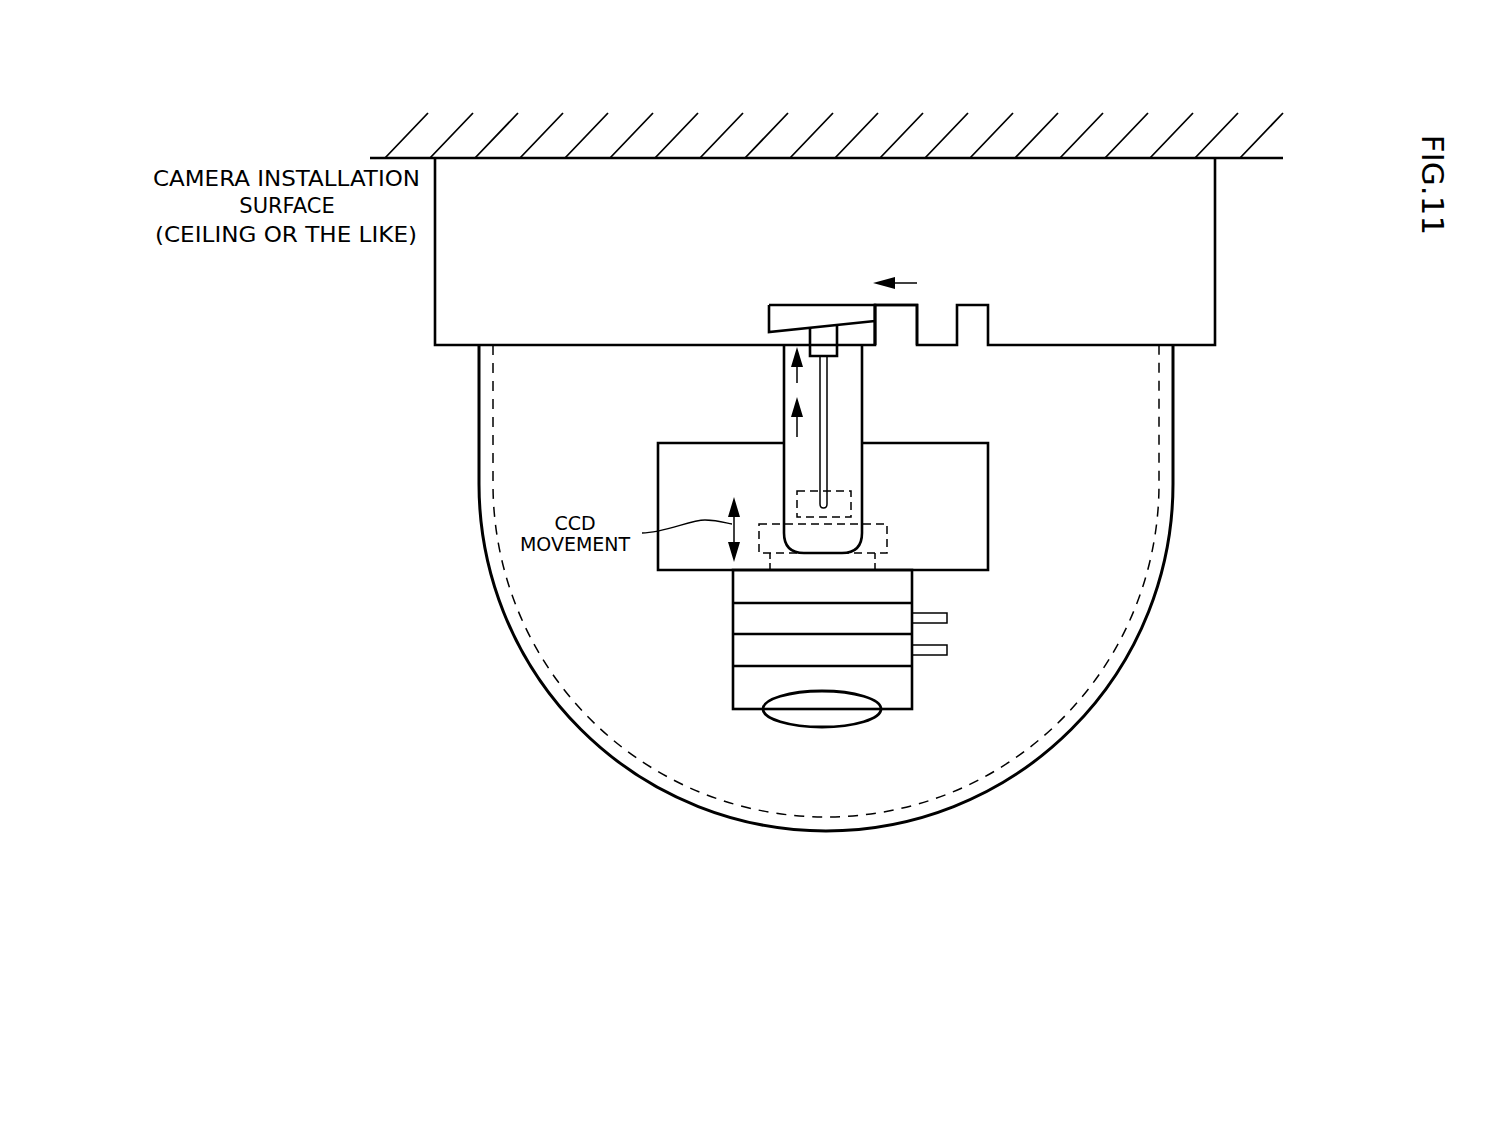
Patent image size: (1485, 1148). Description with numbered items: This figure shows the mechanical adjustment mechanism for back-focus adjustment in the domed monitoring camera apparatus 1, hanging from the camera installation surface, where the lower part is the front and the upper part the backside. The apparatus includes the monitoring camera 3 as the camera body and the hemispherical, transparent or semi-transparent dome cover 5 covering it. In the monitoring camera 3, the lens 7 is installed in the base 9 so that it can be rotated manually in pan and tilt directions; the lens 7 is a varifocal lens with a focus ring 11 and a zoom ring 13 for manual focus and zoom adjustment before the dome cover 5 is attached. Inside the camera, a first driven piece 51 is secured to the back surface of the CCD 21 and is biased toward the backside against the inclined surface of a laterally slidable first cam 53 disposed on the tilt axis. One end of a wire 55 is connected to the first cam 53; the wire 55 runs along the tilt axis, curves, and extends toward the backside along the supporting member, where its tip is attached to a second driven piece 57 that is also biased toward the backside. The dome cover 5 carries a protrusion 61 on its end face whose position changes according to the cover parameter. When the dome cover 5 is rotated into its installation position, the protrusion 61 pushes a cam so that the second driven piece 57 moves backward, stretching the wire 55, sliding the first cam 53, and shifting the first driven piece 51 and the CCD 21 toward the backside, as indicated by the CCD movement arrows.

The domed monitoring camera apparatus 1 is at (1260, 450).
The monitoring camera 3 is at (637, 643).
The dome cover 5 is at (822, 832).
The lens 7 is at (838, 727).
The base 9 is at (638, 269).
The focus ring 11 is at (947, 650).
The zoom ring 13 is at (947, 618).
The CCD 21 is at (887, 540).
The first driven piece 51 is at (844, 522).
The first cam 53 is at (851, 497).
The wire 55 is at (822, 335).
The second driven piece 57 is at (830, 313).
The protrusion 61 is at (903, 327).